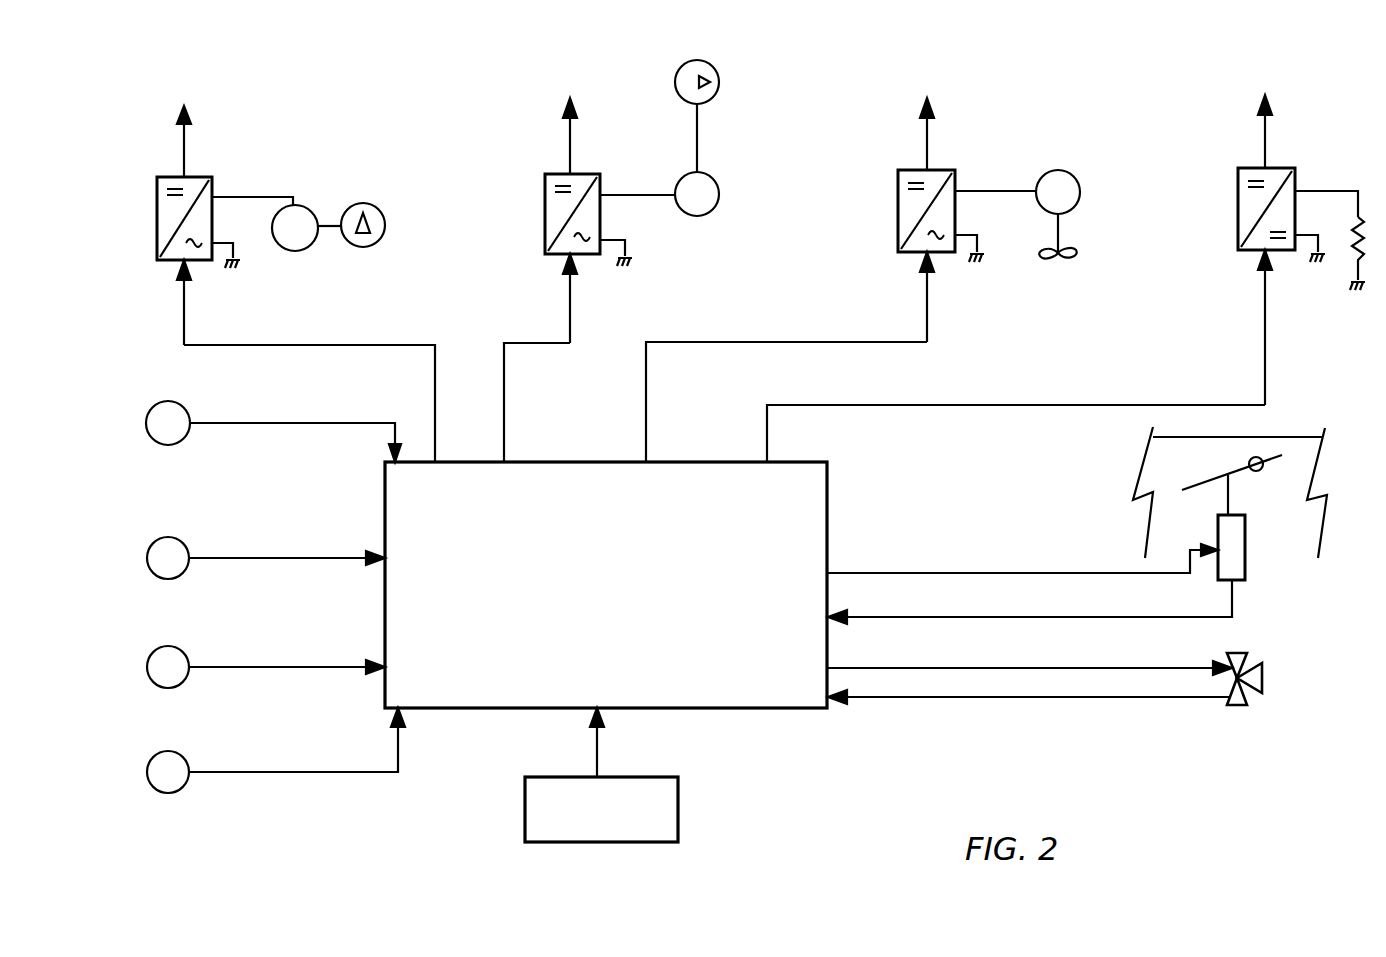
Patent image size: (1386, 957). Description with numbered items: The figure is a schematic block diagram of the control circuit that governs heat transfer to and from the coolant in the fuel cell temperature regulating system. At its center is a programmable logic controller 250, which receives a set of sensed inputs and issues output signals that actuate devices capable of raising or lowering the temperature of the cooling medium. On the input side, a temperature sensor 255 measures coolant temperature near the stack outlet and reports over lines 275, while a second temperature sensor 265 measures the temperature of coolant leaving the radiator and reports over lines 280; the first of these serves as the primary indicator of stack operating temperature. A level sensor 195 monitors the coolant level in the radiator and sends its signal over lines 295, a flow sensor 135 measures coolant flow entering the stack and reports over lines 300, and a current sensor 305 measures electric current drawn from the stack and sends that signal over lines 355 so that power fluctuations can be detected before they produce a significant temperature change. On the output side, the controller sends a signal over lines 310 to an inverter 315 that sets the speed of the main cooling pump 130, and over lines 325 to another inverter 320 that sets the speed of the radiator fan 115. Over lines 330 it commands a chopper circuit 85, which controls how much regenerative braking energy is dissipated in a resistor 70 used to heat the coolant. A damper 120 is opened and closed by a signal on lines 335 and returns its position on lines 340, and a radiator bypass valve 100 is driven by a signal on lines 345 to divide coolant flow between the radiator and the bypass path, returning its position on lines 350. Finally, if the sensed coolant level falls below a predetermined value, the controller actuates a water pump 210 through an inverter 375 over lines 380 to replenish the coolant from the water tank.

The resistor 70 is at (1358, 265).
The chopper circuit 85 is at (1238, 215).
The radiator bypass valve 100 is at (1270, 704).
The radiator fan 115 is at (1063, 155).
The damper 120 is at (1328, 540).
The main cooling pump 130 is at (720, 136).
The flow sensor 135 is at (178, 792).
The level sensor 195 is at (168, 646).
The water pump 210 is at (320, 190).
The programmable logic controller 250 is at (632, 678).
The temperature sensor 255 is at (172, 401).
The temperature sensor 265 is at (158, 540).
The lines 275 is at (290, 423).
The lines 280 is at (246, 558).
The lines 295 is at (268, 667).
The lines 300 is at (255, 772).
The current sensor 305 is at (678, 805).
The lines 310 is at (572, 315).
The inverter 315 is at (545, 220).
The inverter 320 is at (898, 210).
The lines 325 is at (930, 310).
The lines 330 is at (1266, 370).
The lines 335 is at (960, 573).
The lines 340 is at (1153, 617).
The lines 345 is at (920, 668).
The lines 350 is at (1057, 697).
The lines 355 is at (600, 752).
The inverter 375 is at (157, 177).
The lines 380 is at (300, 345).